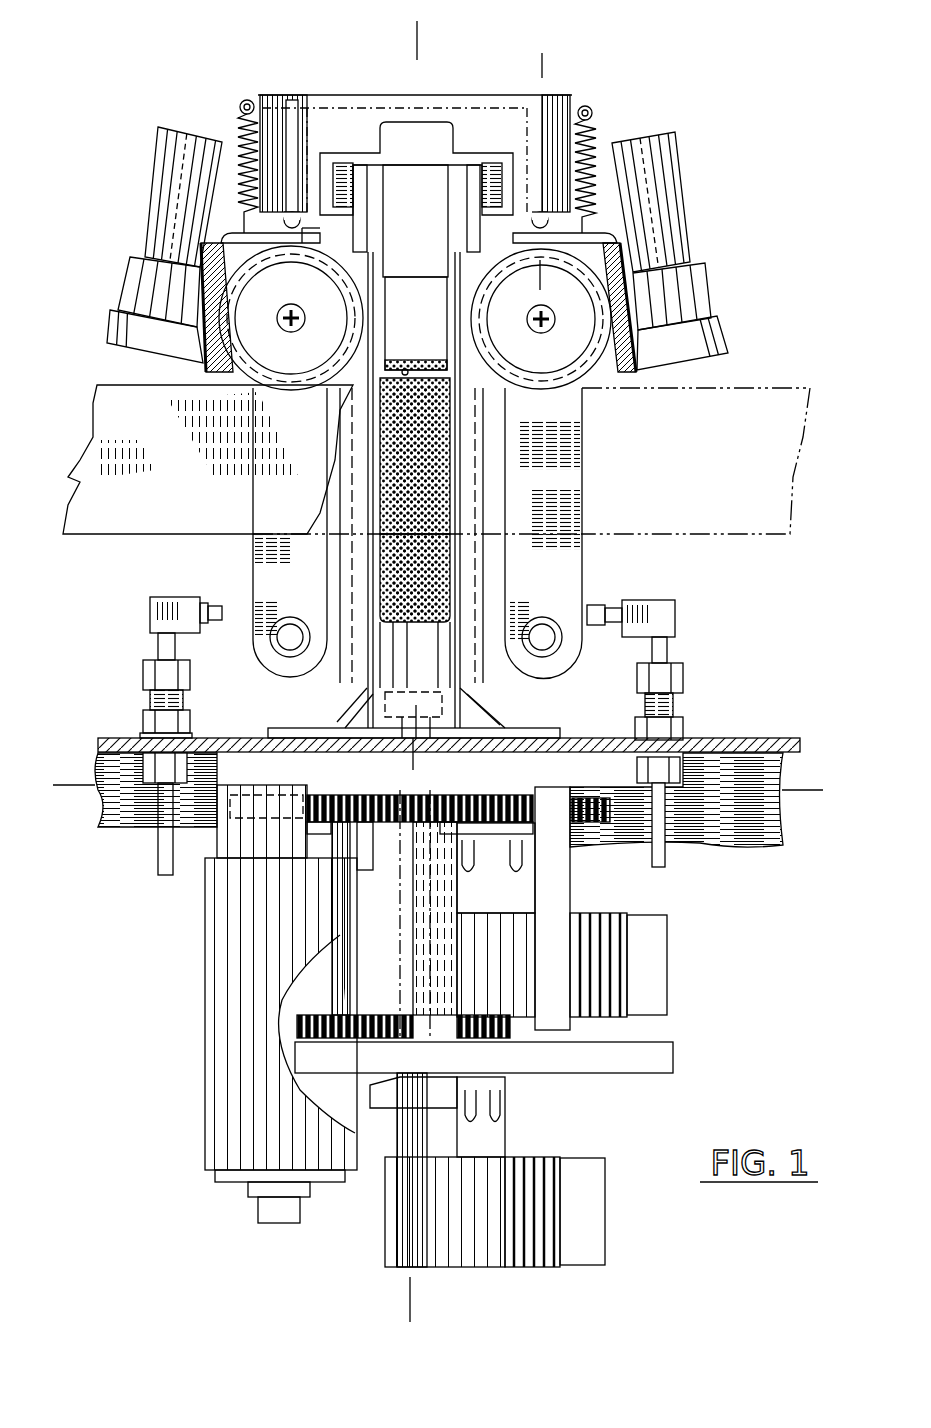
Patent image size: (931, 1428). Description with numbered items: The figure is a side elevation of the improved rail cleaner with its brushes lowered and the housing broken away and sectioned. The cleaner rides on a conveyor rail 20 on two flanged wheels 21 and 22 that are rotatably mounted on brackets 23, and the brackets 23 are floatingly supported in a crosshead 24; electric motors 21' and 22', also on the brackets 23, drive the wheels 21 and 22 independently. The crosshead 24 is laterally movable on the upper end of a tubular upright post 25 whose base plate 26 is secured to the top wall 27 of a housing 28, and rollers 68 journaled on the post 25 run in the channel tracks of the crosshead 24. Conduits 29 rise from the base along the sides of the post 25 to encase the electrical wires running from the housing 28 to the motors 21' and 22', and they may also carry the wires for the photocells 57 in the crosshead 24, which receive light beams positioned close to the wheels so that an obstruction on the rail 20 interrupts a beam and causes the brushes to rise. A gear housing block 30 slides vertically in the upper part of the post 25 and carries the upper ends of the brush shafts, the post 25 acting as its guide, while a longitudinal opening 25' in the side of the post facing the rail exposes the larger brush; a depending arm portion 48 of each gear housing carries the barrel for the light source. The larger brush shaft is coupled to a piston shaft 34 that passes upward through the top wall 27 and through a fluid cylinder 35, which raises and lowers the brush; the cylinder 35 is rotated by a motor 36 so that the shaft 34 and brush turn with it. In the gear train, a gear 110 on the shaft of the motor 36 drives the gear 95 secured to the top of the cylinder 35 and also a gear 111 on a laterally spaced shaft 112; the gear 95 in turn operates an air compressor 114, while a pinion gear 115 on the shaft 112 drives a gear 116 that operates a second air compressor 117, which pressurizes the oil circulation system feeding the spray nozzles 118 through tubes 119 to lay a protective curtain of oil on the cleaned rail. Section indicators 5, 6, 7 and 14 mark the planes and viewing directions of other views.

The section line 5- 5 is at (417, 21).
The section line 7- 7 is at (417, 21).
The view direction 14 is at (499, 53).
The section line 6- 6 is at (53, 785).
The crosshead 24 is at (332, 100).
The photocell 57 is at (530, 224).
The rollers 68 is at (347, 168).
The gear housing block 30 is at (426, 352).
The flanged wheel 21 is at (291, 318).
The flanged wheel 22 is at (541, 319).
The brackets 23 is at (221, 240).
The electric motor 21' is at (146, 236).
The electric motor 22' is at (687, 251).
The conveyor rail 20 is at (152, 514).
The depending arm portion 48 is at (263, 555).
The conduits 29 is at (360, 573).
The upright post 25 is at (353, 456).
The longitudinal opening 25' is at (466, 578).
The spray nozzles 118 is at (233, 622).
The base plate 26 is at (543, 735).
The top wall 27 is at (762, 748).
The housing 28 is at (727, 770).
The tubes 119 is at (157, 863).
The motor 36 is at (247, 977).
The gear 110 is at (260, 795).
The shaft 112 is at (338, 982).
The gear 95 is at (430, 800).
The gear 111 is at (320, 790).
The fluid cylinder 35 is at (437, 958).
The air compressor 114 is at (652, 982).
The pinion gear 115 is at (484, 1058).
The gear 116 is at (510, 1032).
The piston shaft 34 is at (407, 1235).
The air compressor 117 is at (593, 1240).